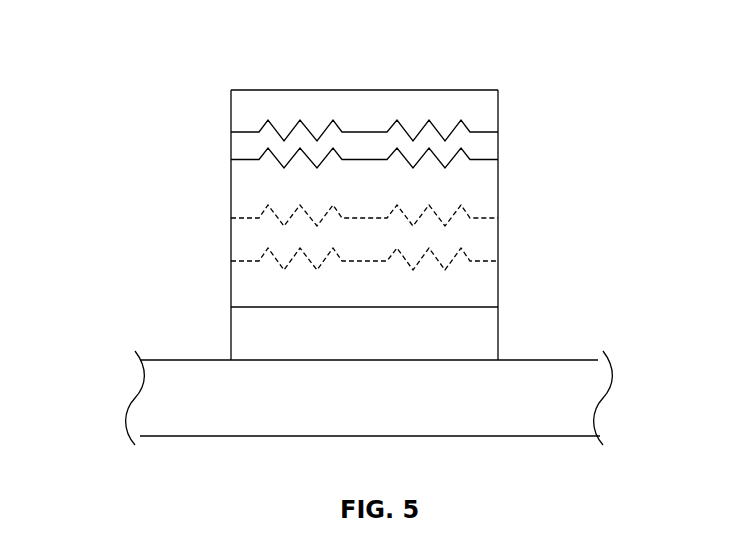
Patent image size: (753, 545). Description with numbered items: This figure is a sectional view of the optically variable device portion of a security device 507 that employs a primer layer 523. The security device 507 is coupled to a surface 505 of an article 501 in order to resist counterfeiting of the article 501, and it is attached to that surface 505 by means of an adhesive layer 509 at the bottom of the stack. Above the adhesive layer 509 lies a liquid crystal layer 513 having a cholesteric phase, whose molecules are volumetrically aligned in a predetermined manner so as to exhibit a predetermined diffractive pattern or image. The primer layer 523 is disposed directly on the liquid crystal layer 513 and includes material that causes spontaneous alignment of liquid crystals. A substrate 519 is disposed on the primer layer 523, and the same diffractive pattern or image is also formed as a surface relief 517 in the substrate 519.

The article 501 is at (136, 329).
The surface 505 is at (592, 354).
The security device 507 is at (218, 211).
The adhesive layer 509 is at (498, 330).
The liquid crystal layer 513 is at (510, 158).
The surface relief 517 is at (338, 124).
The substrate 519 is at (498, 103).
The primer layer 523 is at (498, 145).